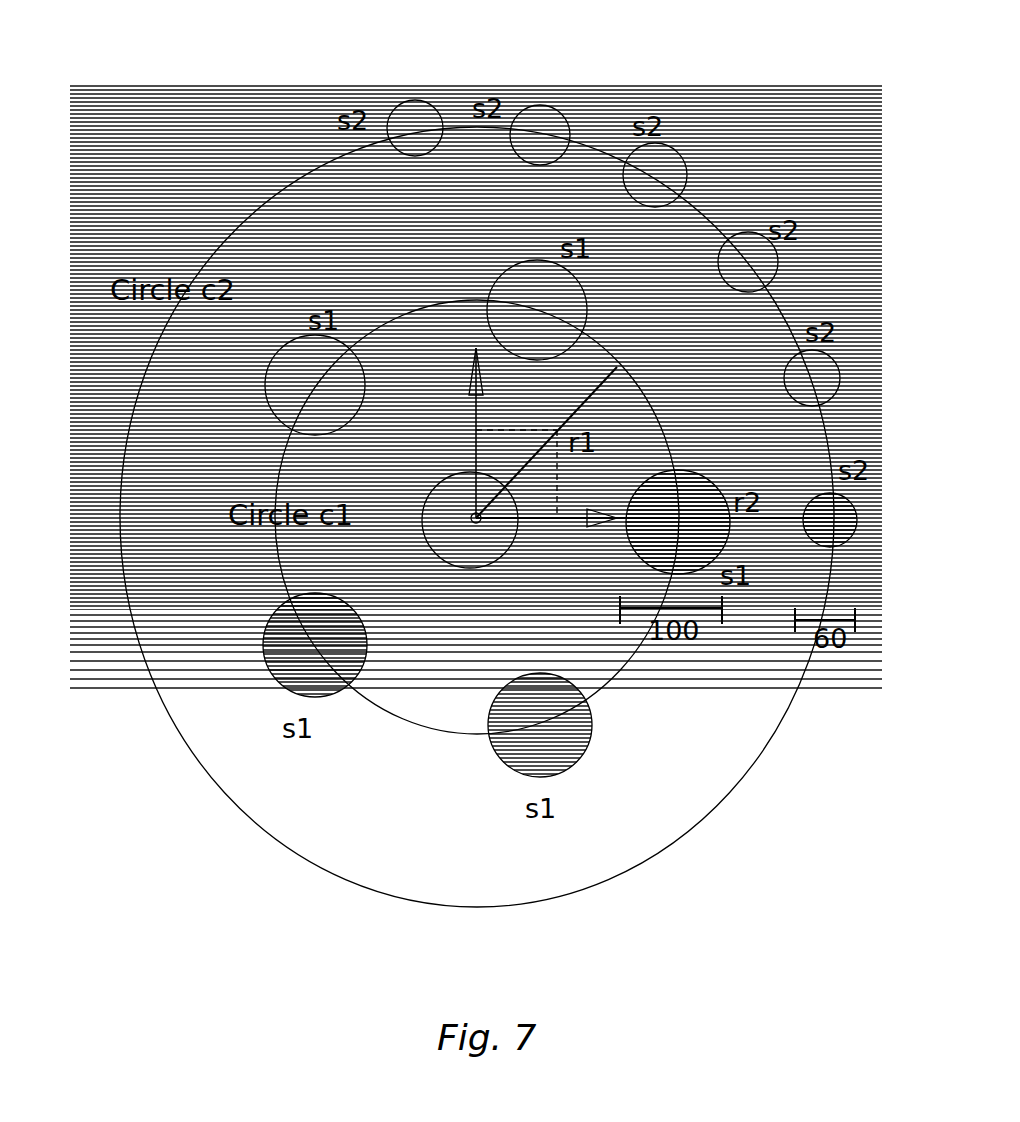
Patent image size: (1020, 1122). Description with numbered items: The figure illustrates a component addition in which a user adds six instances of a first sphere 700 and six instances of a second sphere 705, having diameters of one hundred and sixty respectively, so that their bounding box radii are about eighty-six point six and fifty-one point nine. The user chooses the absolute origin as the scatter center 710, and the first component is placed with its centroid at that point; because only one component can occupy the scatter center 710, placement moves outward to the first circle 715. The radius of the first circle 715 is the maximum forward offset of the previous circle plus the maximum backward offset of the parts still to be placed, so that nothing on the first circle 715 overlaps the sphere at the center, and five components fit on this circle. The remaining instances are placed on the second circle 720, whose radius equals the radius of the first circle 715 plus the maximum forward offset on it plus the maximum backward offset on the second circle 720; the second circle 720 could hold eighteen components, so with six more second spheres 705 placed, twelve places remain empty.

The first sphere s1 700 is at (268, 682).
The second sphere s2 705 is at (403, 95).
The scatter center 710 is at (482, 524).
The circle c1 715 is at (405, 312).
The circle c2 720 is at (705, 215).